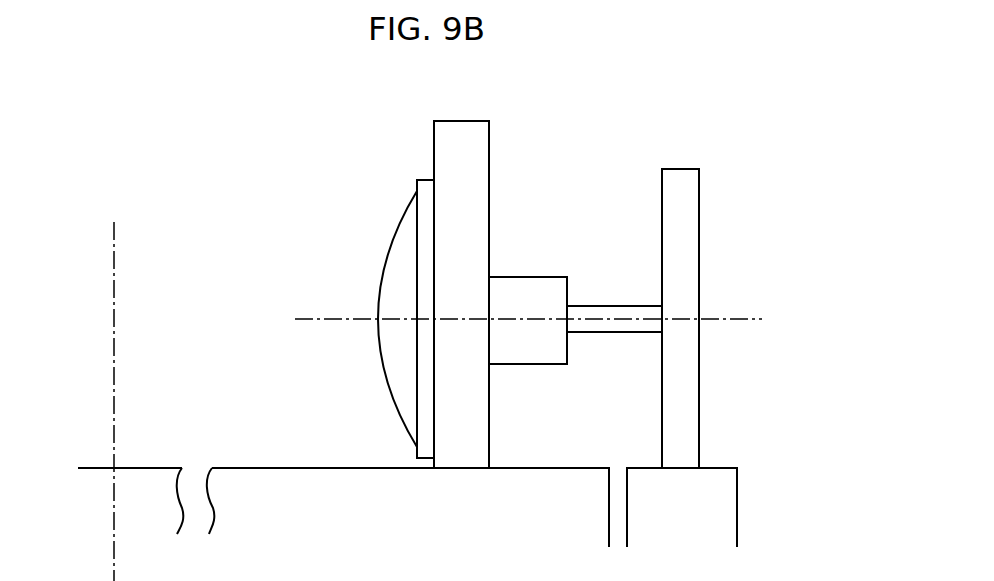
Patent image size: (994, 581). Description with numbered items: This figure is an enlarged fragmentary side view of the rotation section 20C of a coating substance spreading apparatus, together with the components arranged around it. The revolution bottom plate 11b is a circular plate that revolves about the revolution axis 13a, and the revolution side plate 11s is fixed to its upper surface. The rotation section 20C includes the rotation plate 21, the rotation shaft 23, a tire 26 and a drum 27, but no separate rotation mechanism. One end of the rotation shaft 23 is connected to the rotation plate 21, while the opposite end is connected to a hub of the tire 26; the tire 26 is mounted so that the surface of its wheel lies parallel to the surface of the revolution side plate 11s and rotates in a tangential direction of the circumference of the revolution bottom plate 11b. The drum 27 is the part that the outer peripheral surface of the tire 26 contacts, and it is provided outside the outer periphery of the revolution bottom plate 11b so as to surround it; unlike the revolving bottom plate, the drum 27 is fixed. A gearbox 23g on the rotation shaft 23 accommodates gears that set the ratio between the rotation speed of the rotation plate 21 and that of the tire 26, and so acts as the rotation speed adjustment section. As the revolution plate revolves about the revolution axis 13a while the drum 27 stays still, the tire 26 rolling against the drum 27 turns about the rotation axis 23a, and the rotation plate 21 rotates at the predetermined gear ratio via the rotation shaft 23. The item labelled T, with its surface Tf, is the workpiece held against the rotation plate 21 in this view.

The revolution side plate 11s is at (434, 143).
The revolution bottom plate 11b is at (270, 468).
The revolution axis 13a is at (114, 250).
The rotation plate 21 is at (423, 178).
The rotation shaft 23 is at (585, 304).
The gearbox 23g is at (523, 277).
The rotation axis 23a is at (715, 317).
The tire 26 is at (662, 190).
The drum 27 is at (713, 468).
The rotation section 20C is at (545, 293).
The lens T is at (349, 312).
The lens surface Tf is at (380, 267).